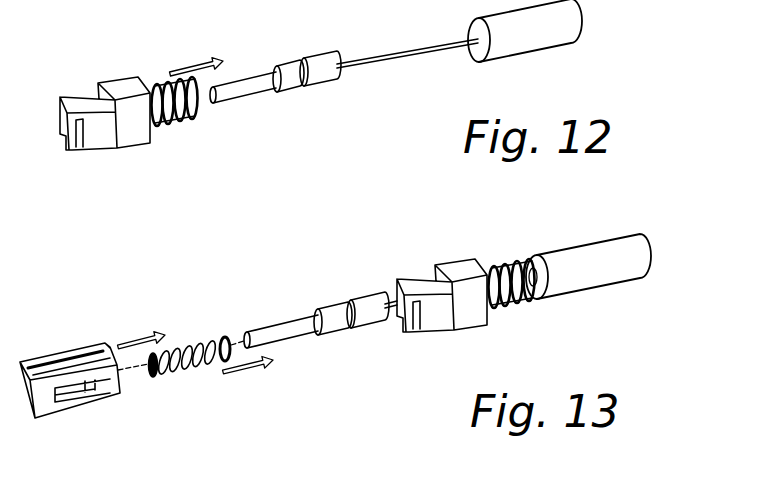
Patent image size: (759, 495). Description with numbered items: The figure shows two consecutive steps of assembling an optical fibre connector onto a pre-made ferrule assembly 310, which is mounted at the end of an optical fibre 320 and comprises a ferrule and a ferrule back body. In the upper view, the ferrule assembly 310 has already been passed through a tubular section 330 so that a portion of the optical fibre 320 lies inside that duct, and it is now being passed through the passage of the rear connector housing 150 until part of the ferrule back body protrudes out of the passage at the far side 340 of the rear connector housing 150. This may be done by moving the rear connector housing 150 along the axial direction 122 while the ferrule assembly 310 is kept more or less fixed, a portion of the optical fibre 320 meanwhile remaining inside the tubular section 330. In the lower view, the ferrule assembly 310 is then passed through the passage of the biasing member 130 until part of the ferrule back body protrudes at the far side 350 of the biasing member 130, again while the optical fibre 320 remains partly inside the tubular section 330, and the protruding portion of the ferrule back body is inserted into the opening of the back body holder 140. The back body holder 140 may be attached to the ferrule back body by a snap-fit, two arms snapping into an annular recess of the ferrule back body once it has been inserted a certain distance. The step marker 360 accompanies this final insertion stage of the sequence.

In FIG. 12, the axial direction 122 is at (208, 98).
In FIG. 13, the axial direction 122 is at (231, 337).
In FIG. 13, the biasing member 130 is at (188, 370).
In FIG. 13, the back body holder 140 is at (78, 412).
In FIG. 12, the rear connector housing 150 is at (100, 148).
In FIG. 13, the rear connector housing 150 is at (440, 322).
In FIG. 12, the ferrule assembly 310 is at (353, 155).
In FIG. 13, the ferrule assembly 310 is at (347, 348).
In FIG. 12, the optical fibre 320 is at (412, 58).
In FIG. 13, the optical fibre 320 is at (388, 318).
In FIG. 12, the tubular section 330 is at (538, 42).
In FIG. 13, the tubular section 330 is at (593, 282).
In FIG. 12, the far side of the rear connector housing 340 is at (45, 100).
In FIG. 13, the far side of the biasing member 350 is at (133, 353).
In FIG. 13, the assembly step 360 is at (7, 367).